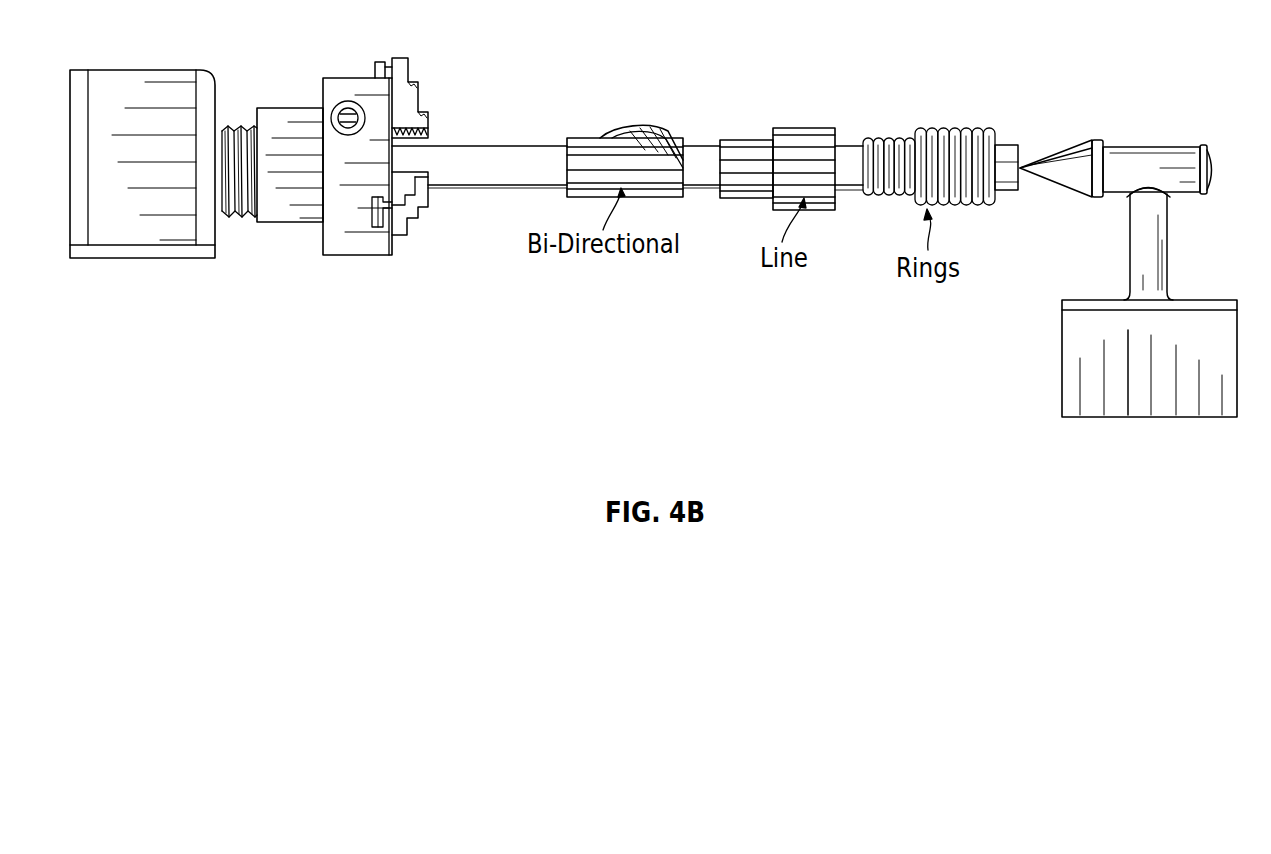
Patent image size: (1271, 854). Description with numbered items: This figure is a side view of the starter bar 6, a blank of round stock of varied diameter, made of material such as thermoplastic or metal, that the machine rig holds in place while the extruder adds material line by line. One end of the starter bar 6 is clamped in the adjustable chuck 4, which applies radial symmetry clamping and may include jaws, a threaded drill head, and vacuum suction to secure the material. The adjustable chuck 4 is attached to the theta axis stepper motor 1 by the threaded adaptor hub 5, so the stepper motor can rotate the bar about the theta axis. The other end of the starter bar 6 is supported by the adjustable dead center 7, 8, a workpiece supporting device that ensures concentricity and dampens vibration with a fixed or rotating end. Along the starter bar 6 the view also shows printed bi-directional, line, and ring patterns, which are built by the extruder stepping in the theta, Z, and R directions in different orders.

The theta axis stepper motor 1 is at (120, 82).
The adjustable chuck 4 is at (291, 112).
The threaded adaptor hub 5 is at (232, 126).
The starter bar 6 is at (480, 145).
The dead center 7 is at (1050, 160).
The dead center 8 is at (1142, 152).